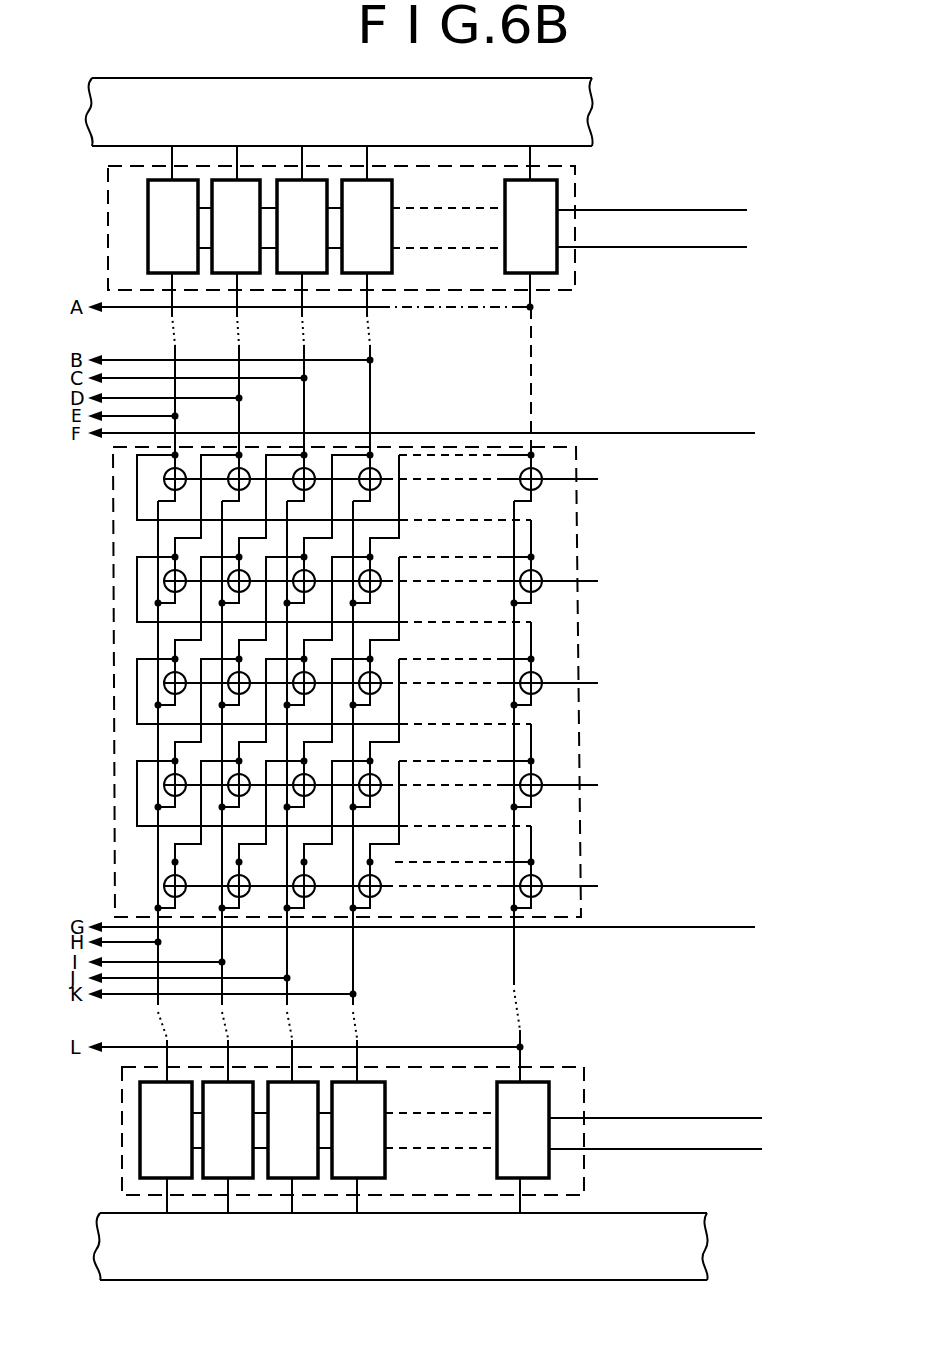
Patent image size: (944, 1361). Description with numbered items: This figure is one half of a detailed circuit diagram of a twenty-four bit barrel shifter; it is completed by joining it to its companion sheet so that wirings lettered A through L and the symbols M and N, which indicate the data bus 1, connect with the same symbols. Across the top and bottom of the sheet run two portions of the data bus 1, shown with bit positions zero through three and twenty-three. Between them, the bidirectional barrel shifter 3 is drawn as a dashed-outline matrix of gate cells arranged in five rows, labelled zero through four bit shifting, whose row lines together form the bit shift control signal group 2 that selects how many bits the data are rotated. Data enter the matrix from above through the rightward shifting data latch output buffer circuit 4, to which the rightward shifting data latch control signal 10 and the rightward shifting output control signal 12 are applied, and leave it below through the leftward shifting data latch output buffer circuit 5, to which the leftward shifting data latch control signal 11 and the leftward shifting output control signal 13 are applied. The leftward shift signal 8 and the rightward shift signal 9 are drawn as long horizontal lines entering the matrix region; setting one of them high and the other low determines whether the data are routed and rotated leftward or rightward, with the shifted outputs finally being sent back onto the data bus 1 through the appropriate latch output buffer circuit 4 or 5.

The data bus 1 is at (598, 93).
The bit shift control signal group 2 is at (742, 915).
The bidirectional barrel shifter 3 is at (112, 690).
The rightward shifting data latch output buffer circuit 4 is at (575, 200).
The leftward shifting data latch output buffer circuit 5 is at (545, 1067).
The leftward shift signal 8 is at (711, 433).
The rightward shift signal 9 is at (708, 927).
The rightward shifting data latch control signal 10 is at (700, 247).
The leftward shifting data latch control signal 11 is at (722, 1118).
The rightward shifting output control signal 12 is at (700, 210).
The leftward shifting output control signal 13 is at (712, 1149).